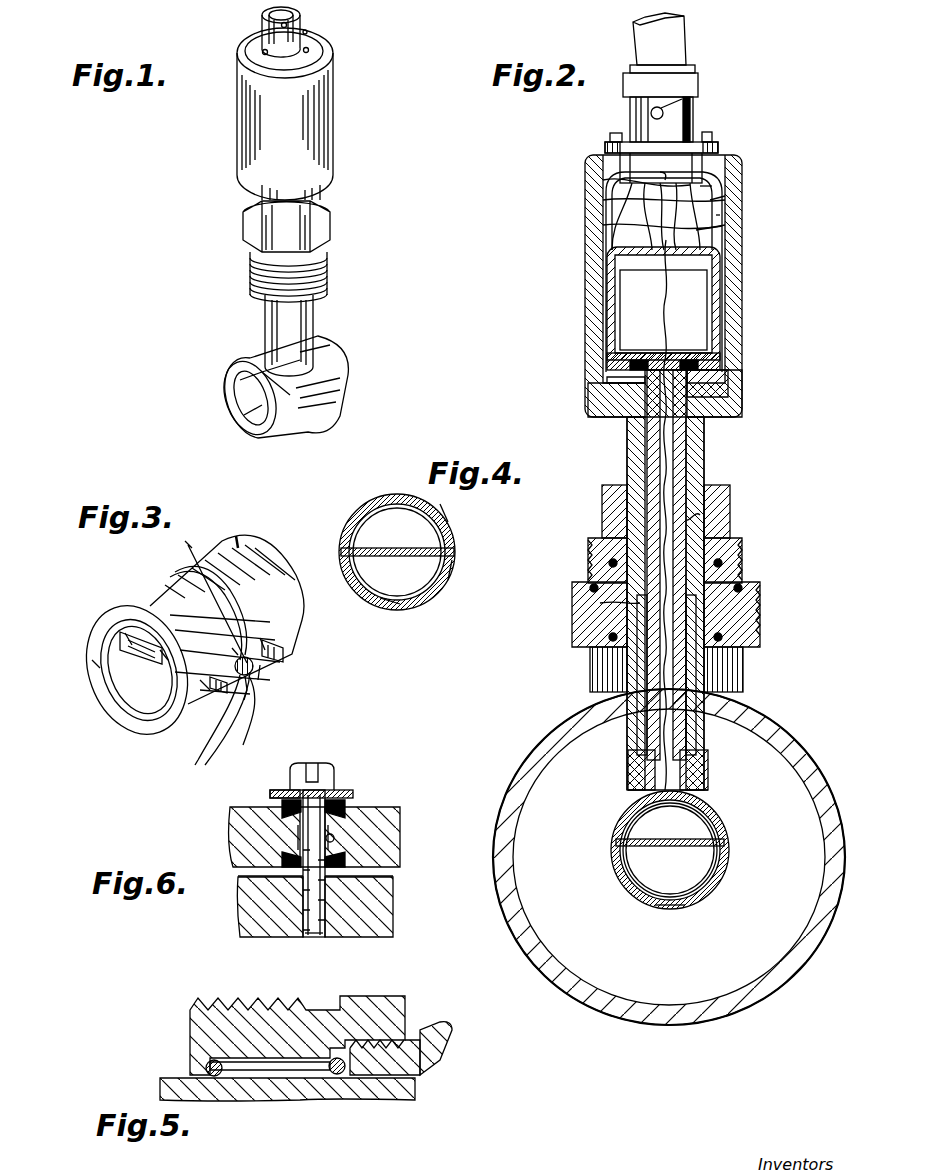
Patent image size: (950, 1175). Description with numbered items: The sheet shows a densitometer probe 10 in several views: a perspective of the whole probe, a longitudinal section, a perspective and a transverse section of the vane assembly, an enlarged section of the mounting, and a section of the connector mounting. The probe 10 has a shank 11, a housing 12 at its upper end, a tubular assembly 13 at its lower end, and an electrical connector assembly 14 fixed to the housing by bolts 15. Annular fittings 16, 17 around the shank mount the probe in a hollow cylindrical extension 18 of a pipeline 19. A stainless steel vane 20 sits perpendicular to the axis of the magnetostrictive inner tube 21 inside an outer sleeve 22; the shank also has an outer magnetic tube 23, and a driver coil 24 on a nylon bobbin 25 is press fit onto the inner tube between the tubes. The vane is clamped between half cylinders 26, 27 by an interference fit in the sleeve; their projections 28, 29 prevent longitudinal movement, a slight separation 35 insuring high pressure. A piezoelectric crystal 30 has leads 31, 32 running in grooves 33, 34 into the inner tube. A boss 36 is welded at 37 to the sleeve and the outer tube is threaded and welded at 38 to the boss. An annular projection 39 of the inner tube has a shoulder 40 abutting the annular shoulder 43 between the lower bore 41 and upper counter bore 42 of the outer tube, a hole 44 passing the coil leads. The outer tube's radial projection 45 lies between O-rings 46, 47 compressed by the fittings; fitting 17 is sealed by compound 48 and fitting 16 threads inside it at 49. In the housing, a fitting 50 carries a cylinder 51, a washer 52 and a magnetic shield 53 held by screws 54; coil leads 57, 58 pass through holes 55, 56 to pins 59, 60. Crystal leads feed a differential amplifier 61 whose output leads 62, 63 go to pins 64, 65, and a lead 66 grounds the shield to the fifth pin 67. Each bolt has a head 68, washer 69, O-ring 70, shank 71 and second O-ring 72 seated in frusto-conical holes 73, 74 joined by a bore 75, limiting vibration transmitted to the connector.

In FIG. 1, the probe 10 is at (190, 210).
In FIG. 1, the shank 11 is at (318, 319).
In FIG. 2, the shank 11 is at (740, 462).
In FIG. 1, the housing 12 is at (335, 119).
In FIG. 2, the housing 12 is at (751, 316).
In FIG. 1, the tubular assembly 13 is at (323, 364).
In FIG. 2, the tubular assembly 13 is at (736, 822).
In FIG. 1, the electrical connector assembly 14 is at (308, 54).
In FIG. 2, the electrical connector assembly 14 is at (635, 118).
In FIG. 6, the electrical connector assembly 14 is at (390, 803).
In FIG. 1, the bolts 15 is at (238, 62).
In FIG. 6, the bolts 15 is at (336, 763).
In FIG. 1, the annular fitting 16 is at (250, 242).
In FIG. 2, the annular fitting 16 is at (736, 492).
In FIG. 5, the annular fitting 16 is at (432, 1023).
In FIG. 1, the annular fitting 17 is at (250, 278).
In FIG. 2, the annular fitting 17 is at (748, 544).
In FIG. 5, the annular fitting 17 is at (368, 996).
In FIG. 2, the hollow cylindrical extension 18 is at (760, 633).
In FIG. 2, the pipeline 19 is at (518, 728).
In FIG. 1, the vane 20 is at (240, 402).
In FIG. 2, the vane 20 is at (672, 830).
In FIG. 3, the vane 20 is at (170, 600).
In FIG. 2, the inner tube 21 is at (686, 447).
In FIG. 2, the outer sleeve 22 is at (712, 868).
In FIG. 2, the outer tube 23 is at (620, 458).
In FIG. 5, the outer tube 23 is at (425, 1092).
In FIG. 2, the driver coil 24 is at (688, 718).
In FIG. 2, the bobbin 25 is at (700, 745).
In FIG. 2, the half cylinder 26 is at (622, 836).
In FIG. 3, the half cylinder 26 is at (245, 525).
In FIG. 4, the half cylinder 26 is at (348, 528).
In FIG. 2, the half cylinder 27 is at (670, 905).
In FIG. 3, the half cylinder 27 is at (290, 650).
In FIG. 4, the half cylinder 27 is at (420, 595).
In FIG. 3, the projections 28 is at (150, 722).
In FIG. 3, the projections 29 is at (160, 735).
In FIG. 2, the piezoelectric crystal 30 is at (730, 843).
In FIG. 3, the piezoelectric crystal 30 is at (235, 715).
In FIG. 4, the piezoelectric crystal 30 is at (458, 552).
In FIG. 3, the electrical lead 31 is at (195, 552).
In FIG. 4, the electrical lead 31 is at (448, 522).
In FIG. 3, the electrical lead 32 is at (250, 740).
In FIG. 4, the electrical lead 32 is at (448, 580).
In FIG. 3, the groove 33 is at (250, 598).
In FIG. 4, the groove 33 is at (400, 494).
In FIG. 3, the groove 34 is at (249, 700).
In FIG. 4, the groove 34 is at (388, 602).
In FIG. 3, the separation 35 is at (170, 735).
In FIG. 2, the boss 36 is at (704, 782).
In FIG. 2, the weld 37 is at (632, 792).
In FIG. 2, the weld 38 is at (632, 780).
In FIG. 2, the annular projection 39 is at (742, 588).
In FIG. 2, the shoulder 40 is at (722, 563).
In FIG. 2, the lower bore 41 is at (720, 640).
In FIG. 2, the upper counter bore 42 is at (700, 515).
In FIG. 2, the annular shoulder 43 is at (600, 603).
In FIG. 2, the hole 44 is at (612, 632).
In FIG. 5, the radial projection 45 is at (270, 1082).
In FIG. 5, the O-ring 46 is at (206, 1068).
In FIG. 5, the O-ring 47 is at (337, 1075).
In FIG. 2, the sealing compound 48 is at (594, 588).
In FIG. 5, the threads 49 is at (372, 1040).
In FIG. 2, the fitting 50 is at (718, 412).
In FIG. 2, the cylinder 51 is at (735, 340).
In FIG. 6, the cylinder 51 is at (378, 908).
In FIG. 2, the washer 52 is at (700, 350).
In FIG. 2, the shield 53 is at (720, 262).
In FIG. 2, the screws 54 is at (718, 380).
In FIG. 2, the radial hole 55 is at (610, 410).
In FIG. 2, the hole 56 is at (607, 388).
In FIG. 2, the coil lead 57 is at (603, 200).
In FIG. 2, the coil lead 58 is at (603, 225).
In FIG. 2, the pin 59 is at (603, 180).
In FIG. 2, the pin 60 is at (657, 228).
In FIG. 2, the differential amplifier 61 is at (625, 297).
In FIG. 2, the output lead 62 is at (720, 215).
In FIG. 2, the output lead 63 is at (735, 233).
In FIG. 2, the pin 64 is at (653, 170).
In FIG. 2, the pin 65 is at (712, 186).
In FIG. 2, the ground lead 66 is at (722, 252).
In FIG. 2, the fifth pin 67 is at (710, 200).
In FIG. 6, the head 68 is at (270, 792).
In FIG. 6, the washer 69 is at (340, 792).
In FIG. 6, the O-ring 70 is at (285, 810).
In FIG. 6, the shank 71 is at (305, 935).
In FIG. 6, the O-ring 72 is at (350, 872).
In FIG. 6, the counter sunk frusto-conical hole 73 is at (298, 835).
In FIG. 6, the counter sunk frusto-conical hole 74 is at (285, 860).
In FIG. 6, the bore 75 is at (334, 838).